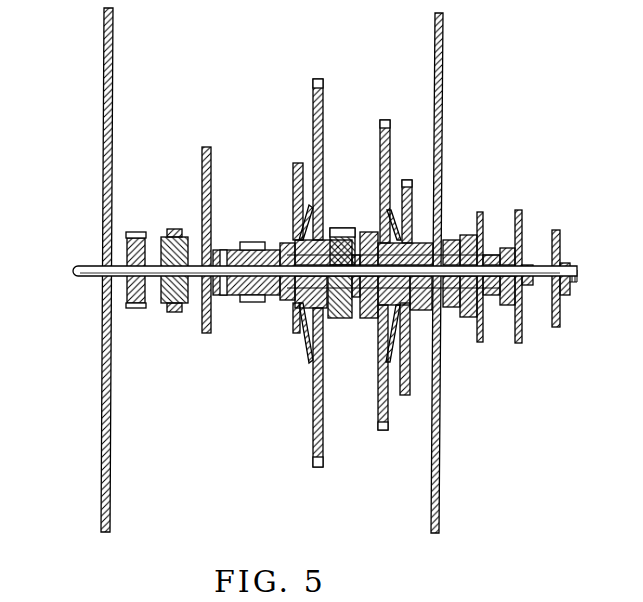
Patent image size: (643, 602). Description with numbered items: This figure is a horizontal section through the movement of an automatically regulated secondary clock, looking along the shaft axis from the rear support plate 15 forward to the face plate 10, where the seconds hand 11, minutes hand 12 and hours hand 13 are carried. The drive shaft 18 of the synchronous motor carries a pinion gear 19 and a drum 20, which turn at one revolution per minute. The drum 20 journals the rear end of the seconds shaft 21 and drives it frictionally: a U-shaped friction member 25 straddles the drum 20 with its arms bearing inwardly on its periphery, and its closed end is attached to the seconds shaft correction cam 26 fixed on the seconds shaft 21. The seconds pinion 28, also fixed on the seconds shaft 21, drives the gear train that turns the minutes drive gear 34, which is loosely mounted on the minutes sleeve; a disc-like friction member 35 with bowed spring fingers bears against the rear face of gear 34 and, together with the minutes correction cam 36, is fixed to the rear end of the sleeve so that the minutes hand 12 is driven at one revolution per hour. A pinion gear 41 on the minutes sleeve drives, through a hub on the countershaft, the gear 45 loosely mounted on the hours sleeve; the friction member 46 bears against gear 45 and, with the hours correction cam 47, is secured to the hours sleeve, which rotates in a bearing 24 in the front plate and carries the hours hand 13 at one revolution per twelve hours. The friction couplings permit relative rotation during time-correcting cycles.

The face plate 10 is at (441, 45).
The seconds hand 11 is at (560, 236).
The minutes hand 12 is at (521, 212).
The hours hand 13 is at (483, 214).
The rear support plate 15 is at (104, 37).
The drive shaft 18 is at (88, 265).
The pinion gear 19 is at (135, 308).
The drum 20 is at (163, 238).
The seconds shaft 21 is at (578, 276).
The bearing 24 is at (452, 310).
The U-shaped friction member 25 is at (172, 313).
The seconds shaft correction cam 26 is at (203, 149).
The seconds pinion 28 is at (246, 244).
The minutes drive gear 34 is at (312, 410).
The friction member 35 is at (300, 336).
The minutes correction cam 36 is at (297, 165).
The pinion gear 41 is at (344, 318).
The gear 45 is at (389, 130).
The friction member 46 is at (394, 212).
The hours correction cam 47 is at (406, 396).